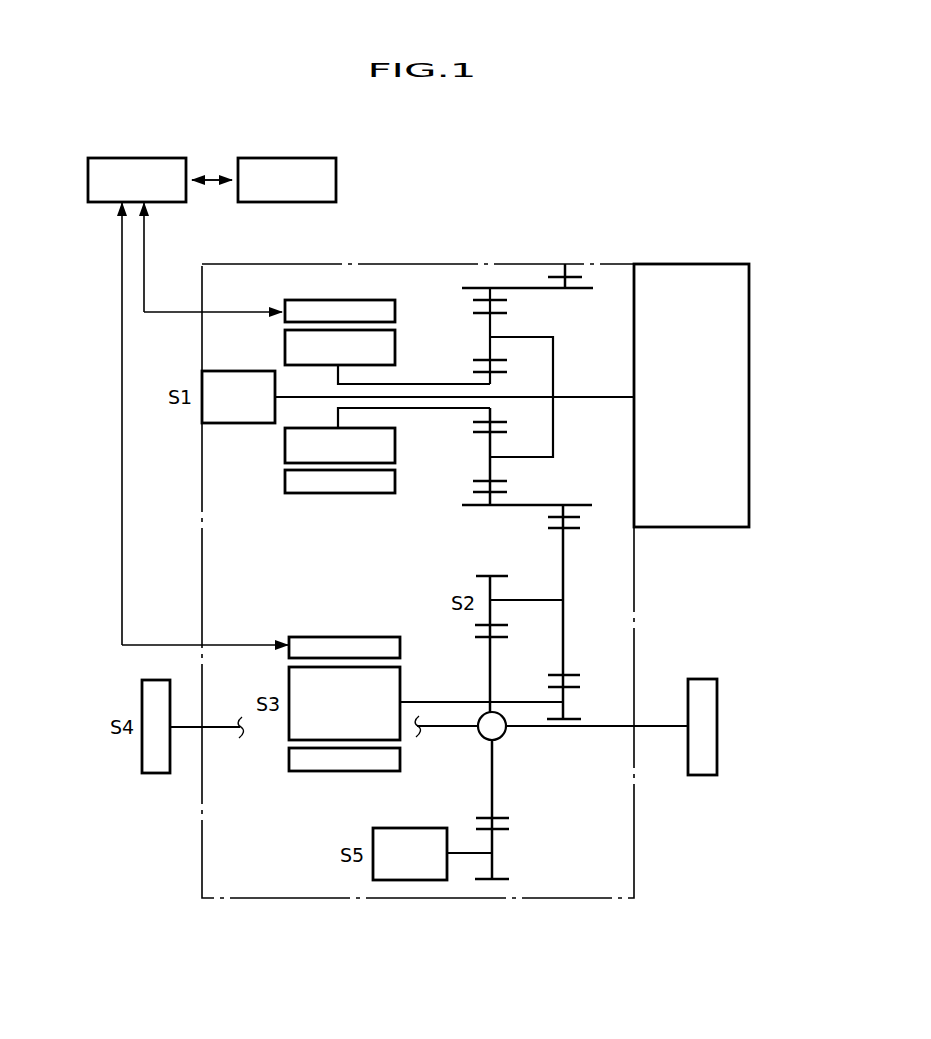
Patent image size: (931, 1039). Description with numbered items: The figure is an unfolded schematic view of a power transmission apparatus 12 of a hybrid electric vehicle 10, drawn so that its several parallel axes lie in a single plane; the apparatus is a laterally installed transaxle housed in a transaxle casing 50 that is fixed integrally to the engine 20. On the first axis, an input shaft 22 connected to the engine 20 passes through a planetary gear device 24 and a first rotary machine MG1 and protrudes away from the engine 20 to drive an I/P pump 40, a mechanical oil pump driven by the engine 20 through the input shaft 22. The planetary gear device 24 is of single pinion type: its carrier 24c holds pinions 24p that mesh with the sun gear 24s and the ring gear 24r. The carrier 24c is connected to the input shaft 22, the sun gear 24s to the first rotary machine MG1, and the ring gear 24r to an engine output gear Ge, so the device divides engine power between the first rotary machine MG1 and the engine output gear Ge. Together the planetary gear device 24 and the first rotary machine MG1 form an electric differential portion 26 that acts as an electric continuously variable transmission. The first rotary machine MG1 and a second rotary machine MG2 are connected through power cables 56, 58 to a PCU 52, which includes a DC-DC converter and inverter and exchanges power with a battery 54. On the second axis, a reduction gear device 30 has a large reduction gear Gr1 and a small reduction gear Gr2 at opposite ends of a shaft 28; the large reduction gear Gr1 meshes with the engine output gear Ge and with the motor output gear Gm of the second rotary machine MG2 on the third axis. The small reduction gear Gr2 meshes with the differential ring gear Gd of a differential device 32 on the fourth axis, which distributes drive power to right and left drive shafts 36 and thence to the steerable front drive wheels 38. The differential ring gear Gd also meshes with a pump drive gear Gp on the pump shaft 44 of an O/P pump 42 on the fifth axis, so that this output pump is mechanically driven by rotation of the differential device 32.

The hybrid electric vehicle 10 is at (678, 170).
The power transmission apparatus 12 is at (425, 290).
The engine 20 is at (750, 350).
The input shaft 22 is at (588, 400).
The planetary gear device 24 is at (430, 483).
The sun gear 24s is at (478, 367).
The carrier 24c is at (527, 336).
The pinions 24p is at (476, 422).
The ring gear 24r is at (503, 497).
The electric differential portion 26 is at (511, 270).
The shaft 28 is at (540, 603).
The reduction gear device 30 is at (611, 588).
The differential device 32 is at (500, 738).
The drive shafts 36 is at (440, 732).
The drive wheels 38 is at (699, 689).
The I/P pump 40 is at (232, 372).
The O/P pump 42 is at (406, 833).
The pump shaft 44 is at (462, 852).
The transaxle casing 50 is at (242, 262).
The PCU 52 is at (137, 158).
The battery 54 is at (287, 158).
The power cable 56 is at (145, 262).
The power cable 58 is at (121, 463).
The first rotary machine MG1 is at (387, 383).
The second rotary machine MG2 is at (426, 691).
The engine output gear Ge is at (569, 278).
The large reduction gear Gr1 is at (577, 525).
The small reduction gear Gr2 is at (486, 574).
The differential ring gear Gd is at (478, 632).
The motor output gear Gm is at (582, 684).
The pump drive gear Gp is at (508, 831).